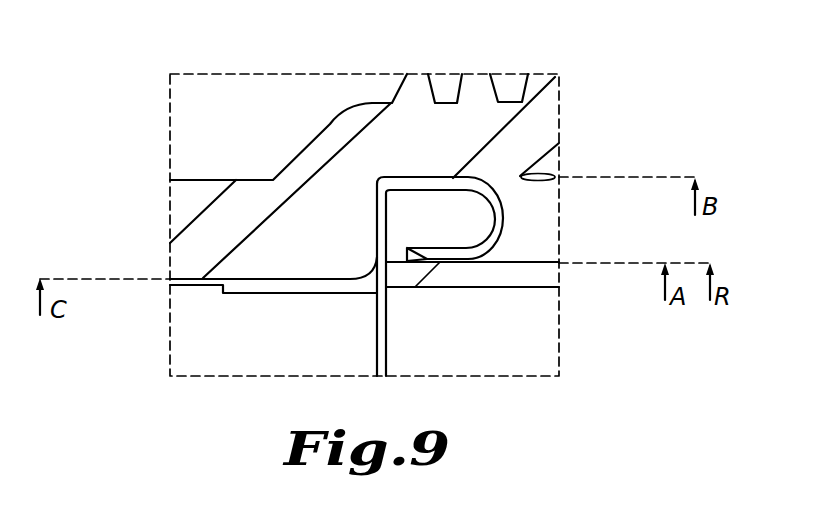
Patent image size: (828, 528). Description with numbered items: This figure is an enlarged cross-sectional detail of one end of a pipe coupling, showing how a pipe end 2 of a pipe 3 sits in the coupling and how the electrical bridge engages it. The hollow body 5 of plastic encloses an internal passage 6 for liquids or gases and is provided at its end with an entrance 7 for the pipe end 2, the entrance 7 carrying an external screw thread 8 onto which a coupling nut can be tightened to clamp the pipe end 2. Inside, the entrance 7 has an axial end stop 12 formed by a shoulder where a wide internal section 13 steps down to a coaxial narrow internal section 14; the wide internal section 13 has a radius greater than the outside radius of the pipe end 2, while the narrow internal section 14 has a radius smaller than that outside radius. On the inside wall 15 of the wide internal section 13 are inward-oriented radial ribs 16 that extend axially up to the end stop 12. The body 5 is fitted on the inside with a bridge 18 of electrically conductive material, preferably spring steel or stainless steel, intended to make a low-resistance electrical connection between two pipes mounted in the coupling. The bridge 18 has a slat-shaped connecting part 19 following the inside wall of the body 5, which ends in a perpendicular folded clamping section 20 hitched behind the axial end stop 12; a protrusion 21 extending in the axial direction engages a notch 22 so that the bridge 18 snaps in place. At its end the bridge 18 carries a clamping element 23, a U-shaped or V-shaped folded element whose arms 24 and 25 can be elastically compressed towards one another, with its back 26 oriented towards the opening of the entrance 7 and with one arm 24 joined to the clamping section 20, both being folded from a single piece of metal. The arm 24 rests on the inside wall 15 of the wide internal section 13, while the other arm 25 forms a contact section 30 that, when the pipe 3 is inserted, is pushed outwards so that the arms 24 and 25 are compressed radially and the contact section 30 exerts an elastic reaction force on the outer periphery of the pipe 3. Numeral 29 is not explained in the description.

The pipe end 2 is at (467, 266).
The pipe 3 is at (401, 270).
The hollow body 5 is at (207, 217).
The internal passage 6 is at (217, 332).
The entrance 7 is at (520, 202).
The external screw thread 8 is at (475, 88).
The axial end stop 12 is at (378, 226).
The wide internal section 13 is at (515, 152).
The narrow internal section 14 is at (199, 145).
The inside wall 15 is at (559, 178).
The radial ribs 16 is at (520, 247).
The bridge 18 is at (155, 298).
The connecting part 19 is at (243, 293).
The clamping section 20 is at (370, 266).
The protrusion 21 is at (372, 245).
The notch 22 is at (378, 243).
The clamping element 23 is at (500, 232).
The arm 24 is at (413, 184).
The arm 25 is at (503, 262).
The back 26 is at (502, 219).
The flange 29 is at (258, 282).
The contact section 30 is at (423, 263).